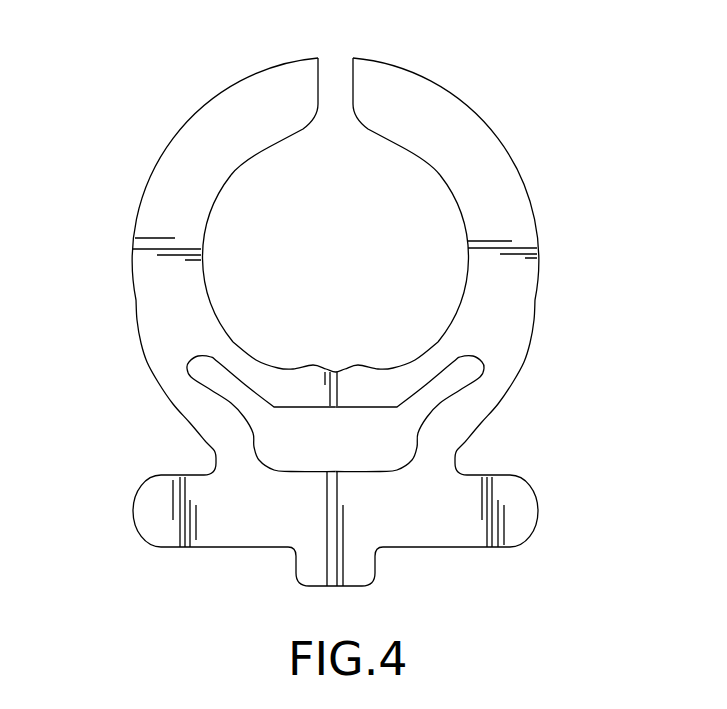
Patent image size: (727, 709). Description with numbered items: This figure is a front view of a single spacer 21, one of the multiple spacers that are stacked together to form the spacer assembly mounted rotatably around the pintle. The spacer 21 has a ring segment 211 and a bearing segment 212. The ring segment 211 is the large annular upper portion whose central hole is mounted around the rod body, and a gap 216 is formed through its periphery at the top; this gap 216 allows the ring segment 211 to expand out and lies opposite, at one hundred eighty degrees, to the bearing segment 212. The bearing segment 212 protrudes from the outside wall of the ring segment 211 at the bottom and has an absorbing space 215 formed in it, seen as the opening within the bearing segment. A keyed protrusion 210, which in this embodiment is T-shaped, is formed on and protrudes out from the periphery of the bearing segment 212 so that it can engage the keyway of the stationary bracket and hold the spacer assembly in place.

The spacer 21 is at (141, 69).
The keyed protrusion 210 is at (312, 574).
The ring segment 211 is at (497, 178).
The bearing segment 212 is at (465, 418).
The absorbing space 215 is at (283, 432).
The gap 216 is at (342, 87).